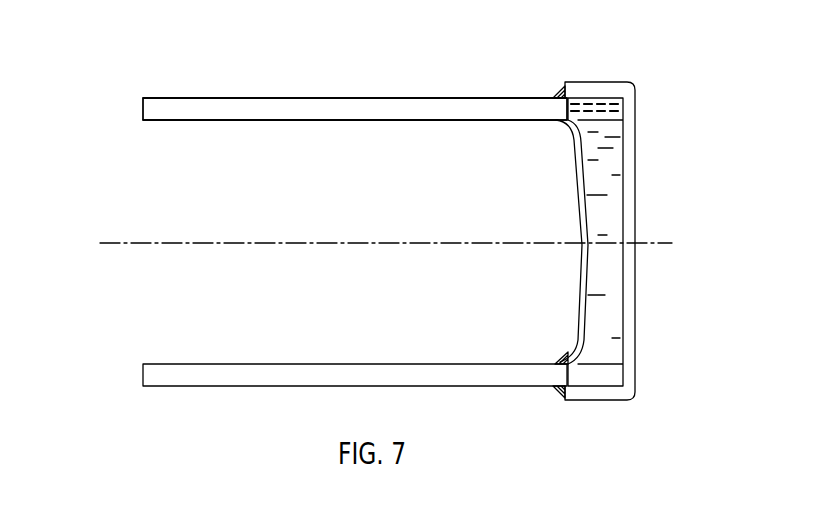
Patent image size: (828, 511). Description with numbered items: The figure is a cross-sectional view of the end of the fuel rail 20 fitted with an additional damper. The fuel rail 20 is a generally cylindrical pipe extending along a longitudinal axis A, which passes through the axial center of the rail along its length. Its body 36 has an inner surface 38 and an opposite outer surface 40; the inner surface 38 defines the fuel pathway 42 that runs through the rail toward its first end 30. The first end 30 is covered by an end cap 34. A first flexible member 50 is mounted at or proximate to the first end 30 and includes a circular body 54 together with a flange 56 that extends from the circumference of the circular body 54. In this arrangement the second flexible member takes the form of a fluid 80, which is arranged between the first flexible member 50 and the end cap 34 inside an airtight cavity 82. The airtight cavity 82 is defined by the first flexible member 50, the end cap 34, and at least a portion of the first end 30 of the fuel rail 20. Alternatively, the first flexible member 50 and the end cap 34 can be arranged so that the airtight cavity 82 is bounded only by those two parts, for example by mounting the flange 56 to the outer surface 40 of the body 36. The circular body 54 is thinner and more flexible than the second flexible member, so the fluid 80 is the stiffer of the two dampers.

The fuel rail 20 is at (275, 98).
The first end 30 is at (556, 109).
The end cap 34 is at (628, 332).
The body 36 is at (189, 98).
The inner surface 38 is at (302, 120).
The outer surface 40 is at (368, 98).
The fuel pathway 42 is at (160, 148).
The first flexible member 50 is at (582, 187).
The circular body 54 is at (578, 310).
The flange 56 is at (567, 352).
The fluid 80 is at (622, 176).
The airtight cavity 82 is at (612, 217).
The longitudinal axis A is at (170, 243).